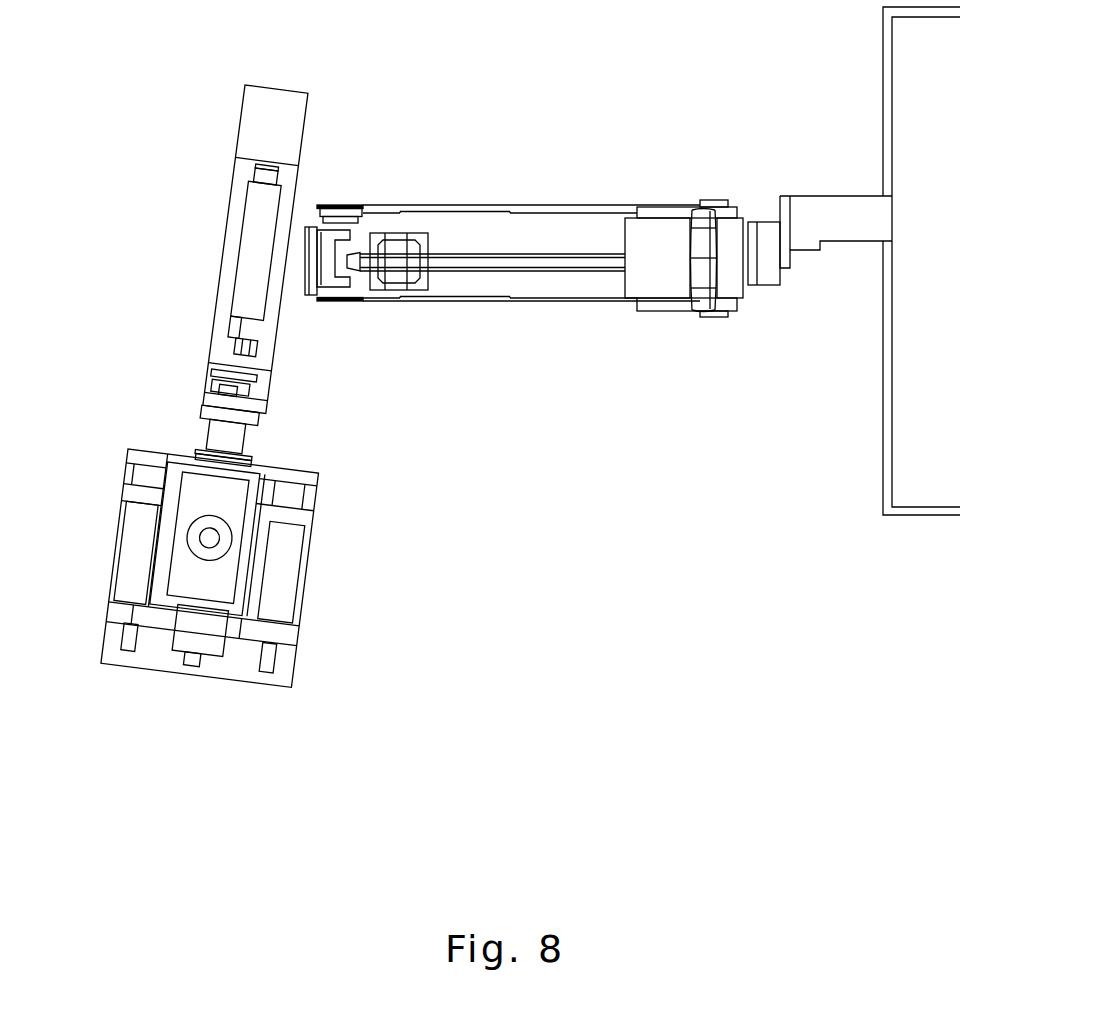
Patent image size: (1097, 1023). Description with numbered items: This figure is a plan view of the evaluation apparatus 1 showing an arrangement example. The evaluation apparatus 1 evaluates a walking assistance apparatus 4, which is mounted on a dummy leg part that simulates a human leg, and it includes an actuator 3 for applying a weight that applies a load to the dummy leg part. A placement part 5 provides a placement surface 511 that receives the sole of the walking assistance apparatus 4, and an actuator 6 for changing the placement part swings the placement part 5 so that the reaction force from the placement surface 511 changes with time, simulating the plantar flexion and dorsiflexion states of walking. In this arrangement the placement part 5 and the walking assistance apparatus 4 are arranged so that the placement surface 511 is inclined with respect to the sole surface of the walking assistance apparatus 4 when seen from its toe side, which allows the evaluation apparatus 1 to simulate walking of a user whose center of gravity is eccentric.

The evaluation apparatus 1 is at (525, 756).
The actuator for applying a weight 3 is at (813, 113).
The walking assistance apparatus 4 is at (558, 195).
The placement part 5 is at (258, 68).
The placement surface 511 is at (268, 322).
The actuator for changing the placement part 6 is at (118, 435).